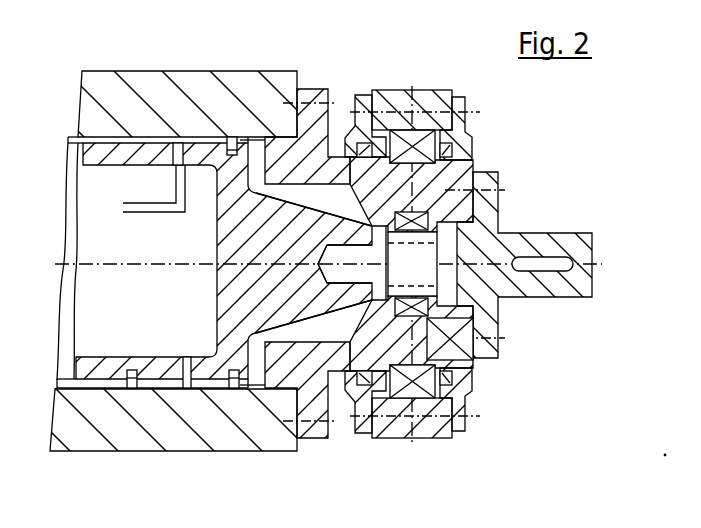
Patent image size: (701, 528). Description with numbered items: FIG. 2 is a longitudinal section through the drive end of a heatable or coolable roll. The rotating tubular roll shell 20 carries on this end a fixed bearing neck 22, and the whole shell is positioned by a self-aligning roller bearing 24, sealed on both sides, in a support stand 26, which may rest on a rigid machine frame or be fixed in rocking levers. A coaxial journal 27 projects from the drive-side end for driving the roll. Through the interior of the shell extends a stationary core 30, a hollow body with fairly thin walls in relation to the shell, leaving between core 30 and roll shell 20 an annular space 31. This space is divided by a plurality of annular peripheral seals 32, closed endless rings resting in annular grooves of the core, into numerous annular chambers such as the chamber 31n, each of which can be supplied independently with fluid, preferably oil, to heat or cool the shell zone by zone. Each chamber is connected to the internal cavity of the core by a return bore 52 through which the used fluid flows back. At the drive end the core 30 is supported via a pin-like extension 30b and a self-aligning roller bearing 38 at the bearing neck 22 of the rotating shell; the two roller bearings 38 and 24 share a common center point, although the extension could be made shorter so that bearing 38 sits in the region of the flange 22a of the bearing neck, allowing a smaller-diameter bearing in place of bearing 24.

The tubular roll shell 20 is at (105, 82).
The bearing neck 22 is at (473, 166).
The flange of the bearing neck 22a is at (305, 93).
The self-aligning roller bearing 24 is at (405, 136).
The support stand 26 is at (430, 100).
The coaxial journal 27 is at (520, 242).
The stationary core 30 is at (90, 158).
The pin-like extension 30b is at (310, 218).
The annular space 31 is at (90, 138).
The annular chamber 31n is at (200, 123).
The annular peripheral seals 32 is at (231, 392).
The self-aligning roller bearing 38 is at (470, 362).
The return bore 52 is at (184, 372).